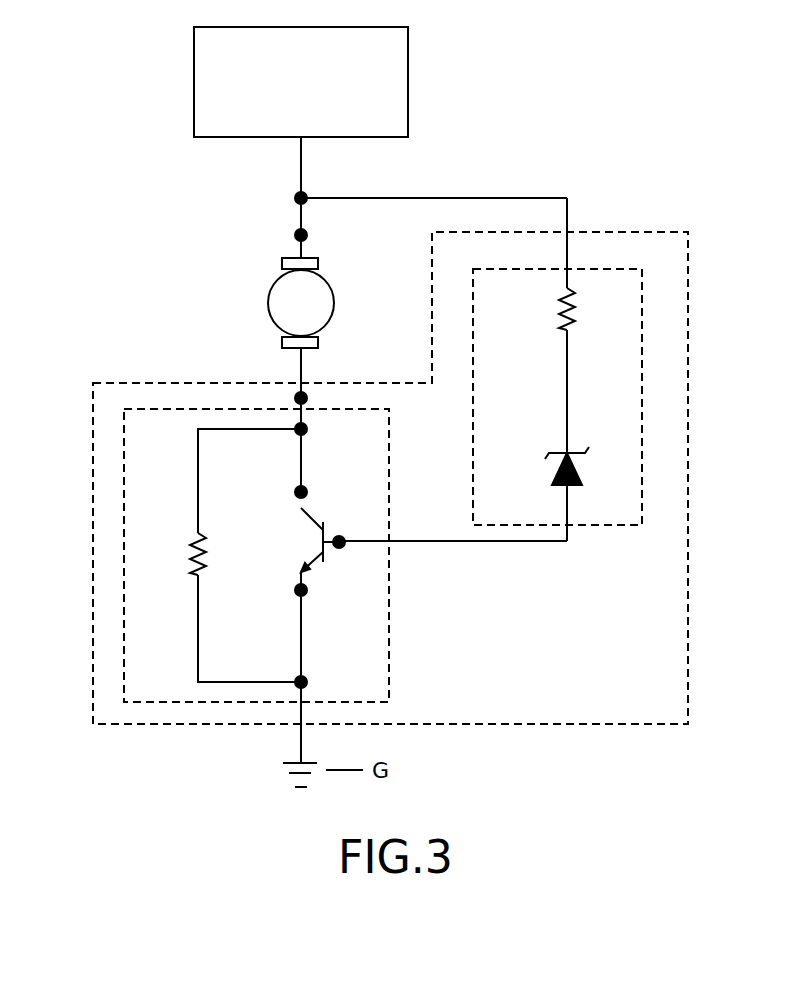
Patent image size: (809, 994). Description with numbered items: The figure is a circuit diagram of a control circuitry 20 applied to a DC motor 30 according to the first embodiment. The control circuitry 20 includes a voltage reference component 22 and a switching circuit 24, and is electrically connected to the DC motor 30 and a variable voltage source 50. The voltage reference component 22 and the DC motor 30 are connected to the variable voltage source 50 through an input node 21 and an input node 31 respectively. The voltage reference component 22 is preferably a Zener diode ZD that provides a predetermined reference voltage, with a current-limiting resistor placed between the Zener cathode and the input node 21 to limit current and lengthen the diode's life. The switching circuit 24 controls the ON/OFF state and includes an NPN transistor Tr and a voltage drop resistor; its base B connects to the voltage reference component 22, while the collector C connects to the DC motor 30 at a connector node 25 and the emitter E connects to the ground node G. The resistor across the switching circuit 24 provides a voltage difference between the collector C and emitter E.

The variable voltage source 50 is at (410, 80).
The input node 21 is at (296, 196).
The input node 31 is at (296, 234).
The DC motor 30 is at (267, 305).
The connector node 25 is at (301, 398).
The control circuitry 20 is at (678, 614).
The voltage reference component 22 is at (620, 408).
The switching circuit 24 is at (367, 635).